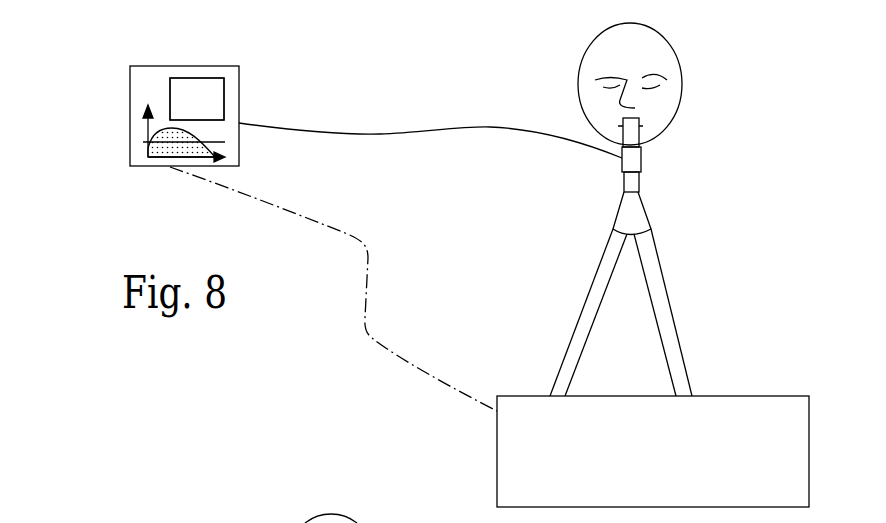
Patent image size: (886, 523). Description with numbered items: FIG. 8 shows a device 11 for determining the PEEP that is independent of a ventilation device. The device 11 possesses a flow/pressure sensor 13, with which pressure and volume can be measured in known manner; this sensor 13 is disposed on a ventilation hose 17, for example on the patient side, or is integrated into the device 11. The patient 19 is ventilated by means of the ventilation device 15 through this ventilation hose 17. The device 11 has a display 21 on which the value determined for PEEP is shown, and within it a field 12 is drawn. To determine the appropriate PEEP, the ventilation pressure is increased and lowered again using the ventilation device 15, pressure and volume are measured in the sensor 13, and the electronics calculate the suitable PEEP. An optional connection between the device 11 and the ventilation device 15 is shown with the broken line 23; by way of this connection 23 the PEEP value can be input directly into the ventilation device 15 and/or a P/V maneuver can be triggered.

The device 11 is at (130, 146).
The display window 12 is at (197, 99).
The flow/pressure sensor 13 is at (642, 165).
The ventilation device 15 is at (497, 442).
The ventilation hose 17 is at (665, 296).
The patient 19 is at (685, 88).
The display 21 is at (178, 78).
The broken line 23 is at (370, 336).